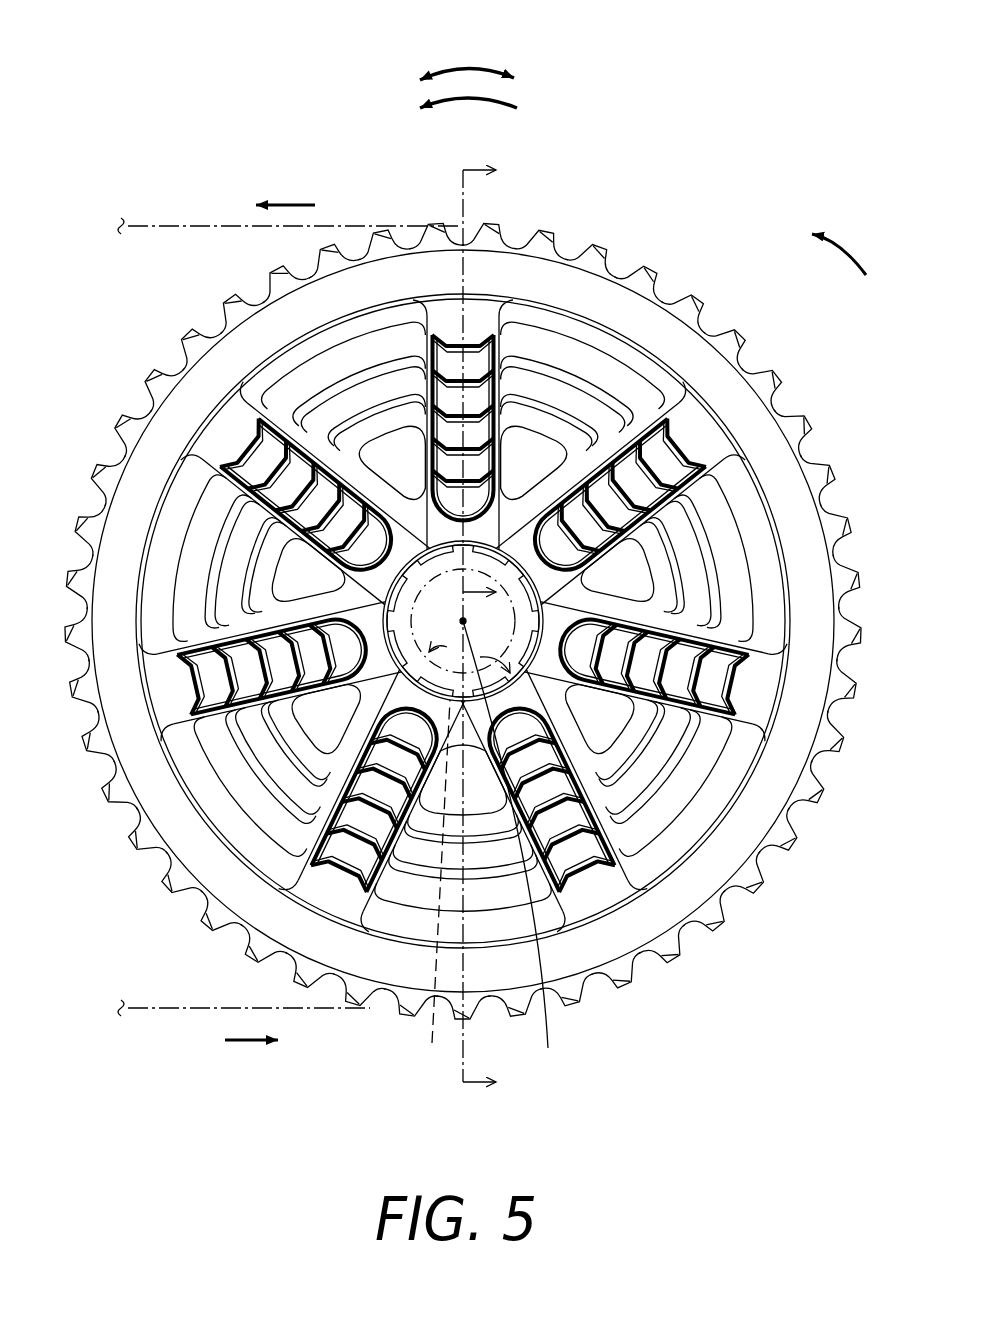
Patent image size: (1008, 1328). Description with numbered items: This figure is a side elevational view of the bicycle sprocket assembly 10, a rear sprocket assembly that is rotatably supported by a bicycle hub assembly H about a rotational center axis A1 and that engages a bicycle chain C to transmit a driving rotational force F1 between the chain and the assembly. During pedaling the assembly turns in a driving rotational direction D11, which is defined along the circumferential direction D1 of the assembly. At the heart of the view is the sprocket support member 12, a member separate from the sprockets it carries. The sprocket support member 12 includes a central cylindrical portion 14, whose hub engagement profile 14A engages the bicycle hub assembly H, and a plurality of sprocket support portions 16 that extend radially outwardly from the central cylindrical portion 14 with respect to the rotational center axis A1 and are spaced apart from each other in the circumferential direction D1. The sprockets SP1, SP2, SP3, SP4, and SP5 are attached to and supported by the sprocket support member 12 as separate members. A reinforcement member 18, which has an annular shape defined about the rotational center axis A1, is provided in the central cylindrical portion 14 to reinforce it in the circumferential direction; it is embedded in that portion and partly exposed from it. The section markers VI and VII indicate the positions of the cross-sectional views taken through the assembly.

The bicycle sprocket assembly 10 is at (718, 146).
The sprocket support member 12 is at (437, 282).
The central cylindrical portion 14 is at (687, 778).
The hub engagement profile 14A is at (560, 843).
The sprocket support portion 16 is at (421, 361).
The reinforcement member 18 is at (386, 590).
The sprocket SP1 is at (524, 238).
The sprocket SP2 is at (551, 352).
The sprocket SP3 is at (566, 386).
The sprocket SP4 is at (645, 580).
The sprocket SP5 is at (669, 561).
The circumferential direction D1 is at (462, 68).
The driving rotational direction D11 is at (497, 96).
The driving rotational force F1 is at (858, 250).
The bicycle chain C is at (151, 214).
The bicycle hub assembly H is at (435, 886).
The rotational center axis A1 is at (512, 848).
The section line VI- VI is at (479, 630).
The section line VII- VII is at (483, 371).